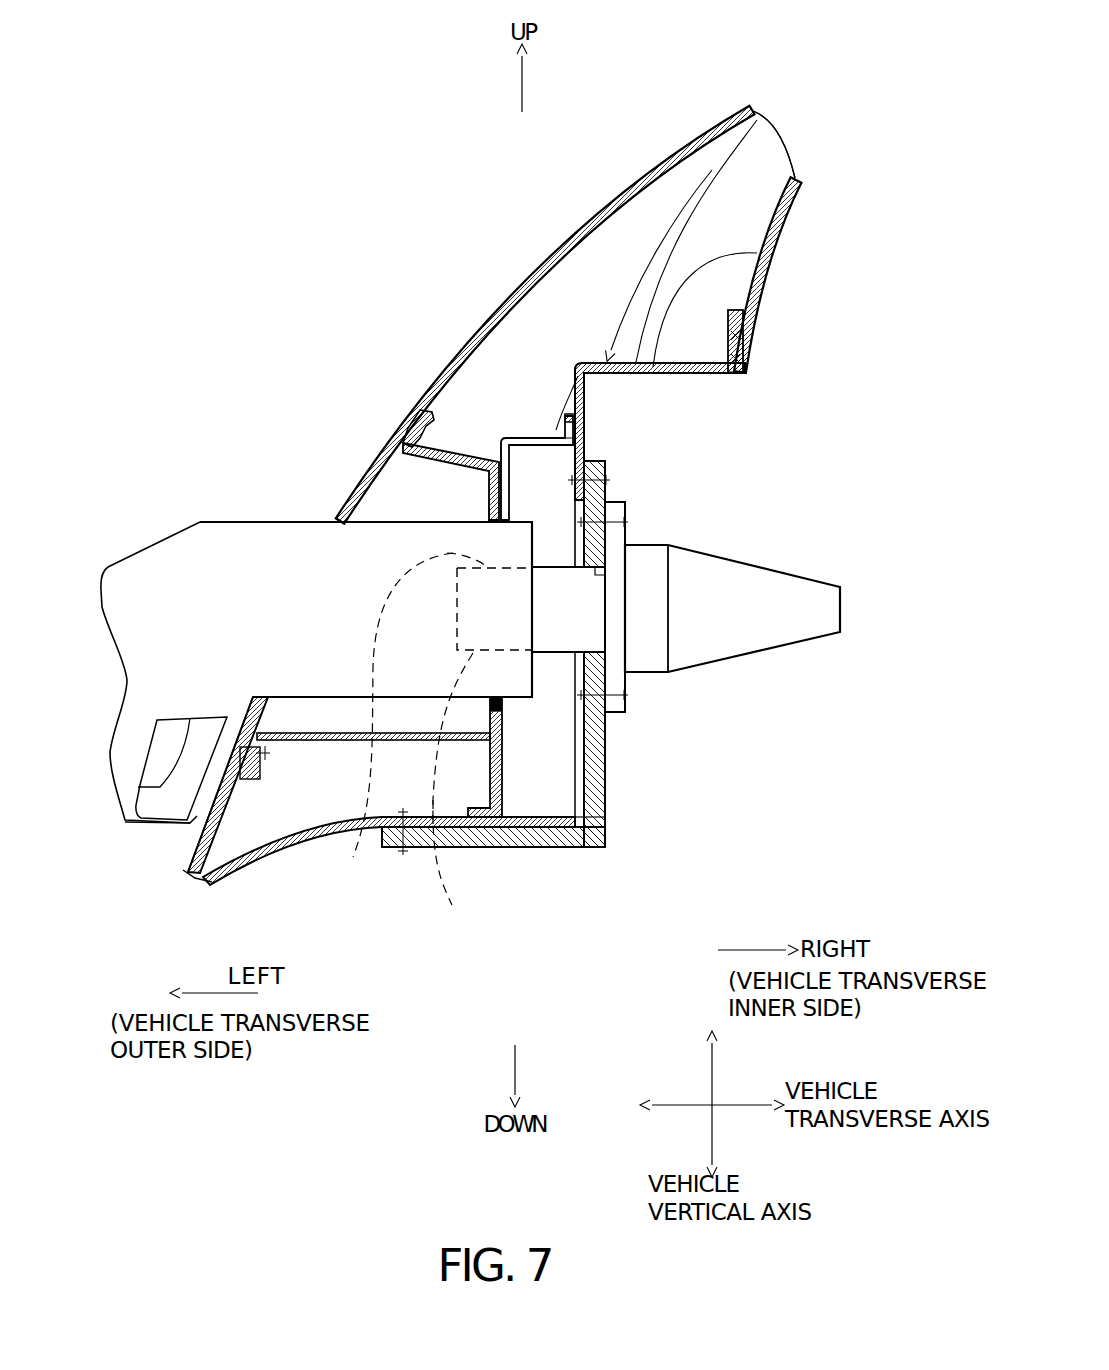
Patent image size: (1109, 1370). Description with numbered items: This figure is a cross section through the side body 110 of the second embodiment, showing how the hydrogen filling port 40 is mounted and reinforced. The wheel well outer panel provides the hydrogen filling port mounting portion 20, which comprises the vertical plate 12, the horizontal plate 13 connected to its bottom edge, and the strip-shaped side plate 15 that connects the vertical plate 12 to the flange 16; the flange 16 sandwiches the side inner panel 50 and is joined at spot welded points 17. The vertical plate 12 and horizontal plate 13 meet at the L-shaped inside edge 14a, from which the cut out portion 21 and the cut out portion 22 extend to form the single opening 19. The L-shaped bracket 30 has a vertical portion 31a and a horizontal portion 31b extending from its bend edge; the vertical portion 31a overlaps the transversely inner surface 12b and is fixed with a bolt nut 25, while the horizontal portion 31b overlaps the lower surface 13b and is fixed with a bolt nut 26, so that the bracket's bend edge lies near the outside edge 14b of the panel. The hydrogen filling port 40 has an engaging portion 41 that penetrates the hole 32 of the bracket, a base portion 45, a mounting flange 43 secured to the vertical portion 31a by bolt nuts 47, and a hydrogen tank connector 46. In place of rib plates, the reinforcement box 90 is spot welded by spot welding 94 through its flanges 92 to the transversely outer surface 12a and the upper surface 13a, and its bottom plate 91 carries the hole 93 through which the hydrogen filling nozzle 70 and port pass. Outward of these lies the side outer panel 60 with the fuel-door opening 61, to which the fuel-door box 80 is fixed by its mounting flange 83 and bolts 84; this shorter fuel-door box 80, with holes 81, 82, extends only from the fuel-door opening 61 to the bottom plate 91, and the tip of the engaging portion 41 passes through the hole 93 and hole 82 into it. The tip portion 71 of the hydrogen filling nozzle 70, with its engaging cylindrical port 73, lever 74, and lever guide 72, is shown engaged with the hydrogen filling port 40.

The side body 110 is at (270, 158).
The side outer panel 60 is at (598, 203).
The fuel-door opening 61 is at (346, 492).
The tip portion 71 is at (397, 477).
The vertical plate 12 is at (648, 367).
The transversely outer surface 12a is at (774, 144).
The transversely inner surface 12b is at (745, 380).
The hydrogen filling port mounting portion 20 is at (796, 178).
The side inner panel 50 is at (795, 218).
The side plate 15 is at (760, 258).
The flange 16 is at (745, 326).
The spot welded points 17 is at (752, 328).
The reinforcement box 90 is at (592, 408).
The bottom plate 91 is at (440, 795).
The flanges 92 is at (575, 442).
The hole 93 is at (541, 425).
The spot welding 94 is at (584, 420).
The fuel-door box 80 is at (472, 440).
The hole 81 is at (450, 405).
The hole 82 is at (487, 520).
The mounting flange 83 is at (402, 444).
The bolts 84 is at (406, 418).
The hydrogen filling nozzle 70 is at (217, 510).
The lever guide 72 is at (178, 824).
The lever 74 is at (148, 820).
The engaging cylindrical port 73 is at (350, 830).
The horizontal plate 13 is at (280, 828).
The upper surface 13a is at (220, 784).
The lower surface 13b is at (330, 835).
The bolt nut 26 is at (400, 850).
The engaging portion 41 is at (440, 900).
The outside edge 14b is at (612, 825).
The inside edge 14a is at (580, 850).
The cut out portion 22 is at (523, 850).
The horizontal portion 31b is at (548, 850).
The L-shaped bracket 30 is at (612, 758).
The vertical portion 31a is at (609, 733).
The opening 19 is at (579, 782).
The cut out portion 21 is at (597, 572).
The bolt nut 25 is at (618, 483).
The hole 32 is at (657, 582).
The mounting flange 43 is at (626, 712).
The hydrogen filling port 40 is at (790, 560).
The base portion 45 is at (698, 548).
The hydrogen tank connector 46 is at (803, 622).
The bolt nuts 47 is at (628, 694).